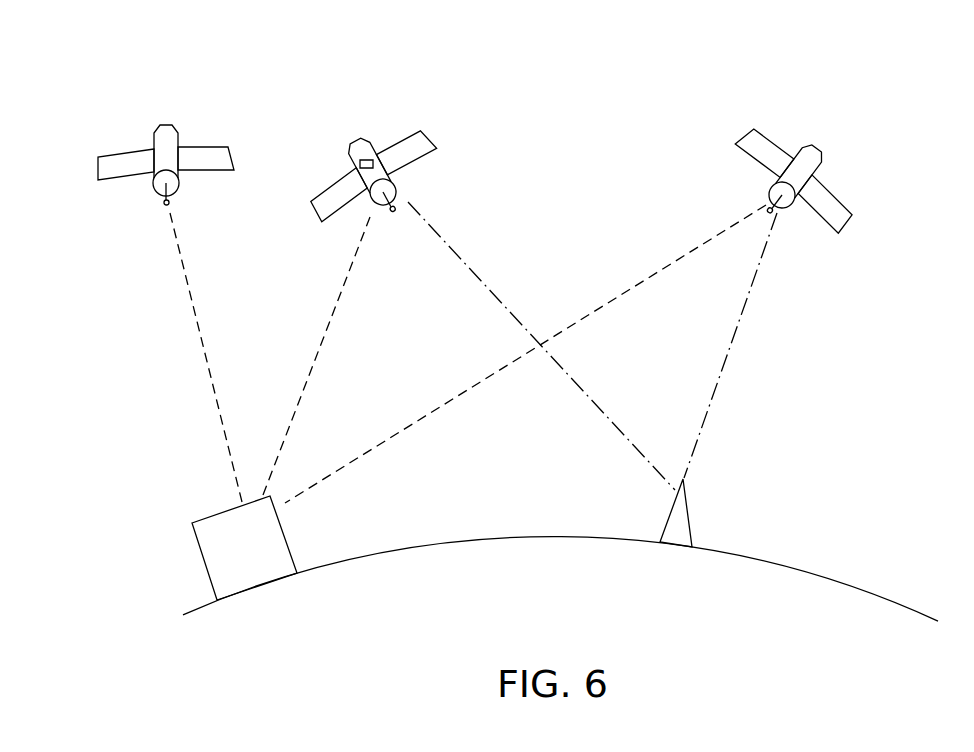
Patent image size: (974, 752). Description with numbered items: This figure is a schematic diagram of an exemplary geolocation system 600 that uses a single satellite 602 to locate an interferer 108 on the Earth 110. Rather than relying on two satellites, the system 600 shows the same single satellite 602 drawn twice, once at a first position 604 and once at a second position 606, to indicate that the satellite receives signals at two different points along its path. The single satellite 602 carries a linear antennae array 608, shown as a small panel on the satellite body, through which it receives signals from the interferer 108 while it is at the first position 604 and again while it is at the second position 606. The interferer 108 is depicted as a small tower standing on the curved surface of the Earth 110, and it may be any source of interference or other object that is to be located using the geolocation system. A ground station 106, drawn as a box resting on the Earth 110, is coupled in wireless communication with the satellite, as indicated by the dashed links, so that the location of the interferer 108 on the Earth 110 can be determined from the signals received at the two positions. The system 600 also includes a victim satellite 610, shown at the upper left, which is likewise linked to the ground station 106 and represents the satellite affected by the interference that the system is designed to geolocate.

The geolocation system 600 is at (732, 62).
The single satellite 602 is at (587, 172).
The first position 604 is at (413, 134).
The second position 606 is at (743, 137).
The linear antennae array 608 is at (354, 150).
The victim satellite 610 is at (159, 124).
The ground station 106 is at (222, 512).
The interferer 108 is at (678, 518).
The Earth 110 is at (529, 601).